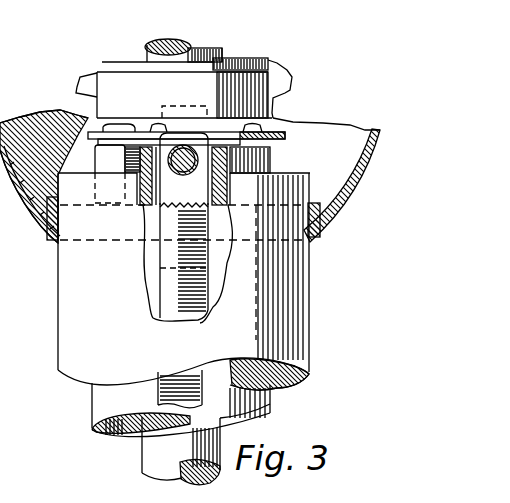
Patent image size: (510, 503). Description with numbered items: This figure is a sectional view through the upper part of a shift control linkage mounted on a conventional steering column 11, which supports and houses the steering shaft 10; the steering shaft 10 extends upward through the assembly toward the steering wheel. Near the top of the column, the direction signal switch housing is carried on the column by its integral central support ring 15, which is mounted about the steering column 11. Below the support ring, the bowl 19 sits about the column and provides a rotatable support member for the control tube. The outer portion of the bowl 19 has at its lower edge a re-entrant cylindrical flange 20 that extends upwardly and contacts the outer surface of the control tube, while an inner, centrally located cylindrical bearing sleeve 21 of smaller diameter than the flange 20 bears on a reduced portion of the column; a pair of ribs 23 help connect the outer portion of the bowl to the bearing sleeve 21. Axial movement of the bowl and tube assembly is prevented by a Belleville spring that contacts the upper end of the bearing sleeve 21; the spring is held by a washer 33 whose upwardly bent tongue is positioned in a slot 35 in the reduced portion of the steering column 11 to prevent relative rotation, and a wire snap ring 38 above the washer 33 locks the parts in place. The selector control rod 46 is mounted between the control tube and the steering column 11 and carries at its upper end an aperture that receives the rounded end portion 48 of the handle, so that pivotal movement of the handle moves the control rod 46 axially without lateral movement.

The steering shaft 10 is at (166, 40).
The steering column 11 is at (250, 407).
The central support ring 15 is at (108, 80).
The bowl assembly 19 is at (367, 181).
The re-entrant cylindrical flange 20 is at (316, 222).
The cylindrical bearing sleeve 21 is at (263, 162).
The ribs 23 is at (137, 207).
The washer 33 is at (275, 136).
The slot 35 is at (163, 106).
The wire snap ring 38 is at (113, 128).
The selector control rod 46 is at (160, 294).
The rounded end portion 48 is at (184, 147).